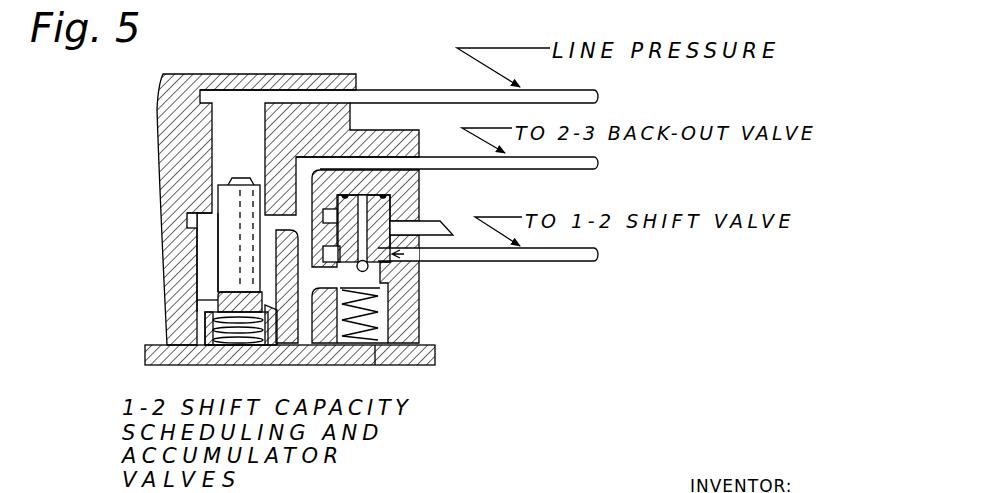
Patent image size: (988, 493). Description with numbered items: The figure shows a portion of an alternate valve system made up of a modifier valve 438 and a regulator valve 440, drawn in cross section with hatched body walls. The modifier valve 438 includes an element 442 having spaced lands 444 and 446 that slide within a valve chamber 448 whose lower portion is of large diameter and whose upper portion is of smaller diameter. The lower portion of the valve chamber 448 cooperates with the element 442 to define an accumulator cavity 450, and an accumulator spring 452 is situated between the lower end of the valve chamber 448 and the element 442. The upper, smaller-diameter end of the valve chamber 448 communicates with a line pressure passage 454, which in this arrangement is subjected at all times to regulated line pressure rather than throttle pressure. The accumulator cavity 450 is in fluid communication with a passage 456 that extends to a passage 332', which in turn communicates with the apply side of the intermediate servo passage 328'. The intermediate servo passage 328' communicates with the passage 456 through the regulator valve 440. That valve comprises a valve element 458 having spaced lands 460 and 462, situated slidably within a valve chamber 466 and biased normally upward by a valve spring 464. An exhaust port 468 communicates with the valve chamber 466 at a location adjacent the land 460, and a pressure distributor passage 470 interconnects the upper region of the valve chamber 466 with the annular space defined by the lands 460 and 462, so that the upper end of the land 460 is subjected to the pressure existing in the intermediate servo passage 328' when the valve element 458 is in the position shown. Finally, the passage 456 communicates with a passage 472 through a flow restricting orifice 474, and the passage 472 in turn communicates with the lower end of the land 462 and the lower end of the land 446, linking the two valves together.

The modifier valve 438 is at (200, 200).
The regulator valve 440 is at (385, 270).
The element 442 is at (230, 232).
The land 444 is at (232, 182).
The land 446 is at (206, 310).
The valve chamber 448 is at (208, 258).
The accumulator cavity 450 is at (214, 270).
The accumulator spring 452 is at (200, 322).
The line pressure passage 454 is at (390, 90).
The passage 456 is at (292, 335).
The valve element 458 is at (372, 296).
The land 460 is at (404, 197).
The land 462 is at (400, 341).
The valve spring 464 is at (392, 348).
The valve chamber 466 is at (365, 304).
The exhaust port 468 is at (445, 238).
The pressure distributor passage 470 is at (398, 214).
The passage 472 is at (185, 350).
The flow restricting orifice 474 is at (252, 347).
The intermediate servo passage 328' is at (495, 275).
The passage 332' is at (463, 178).